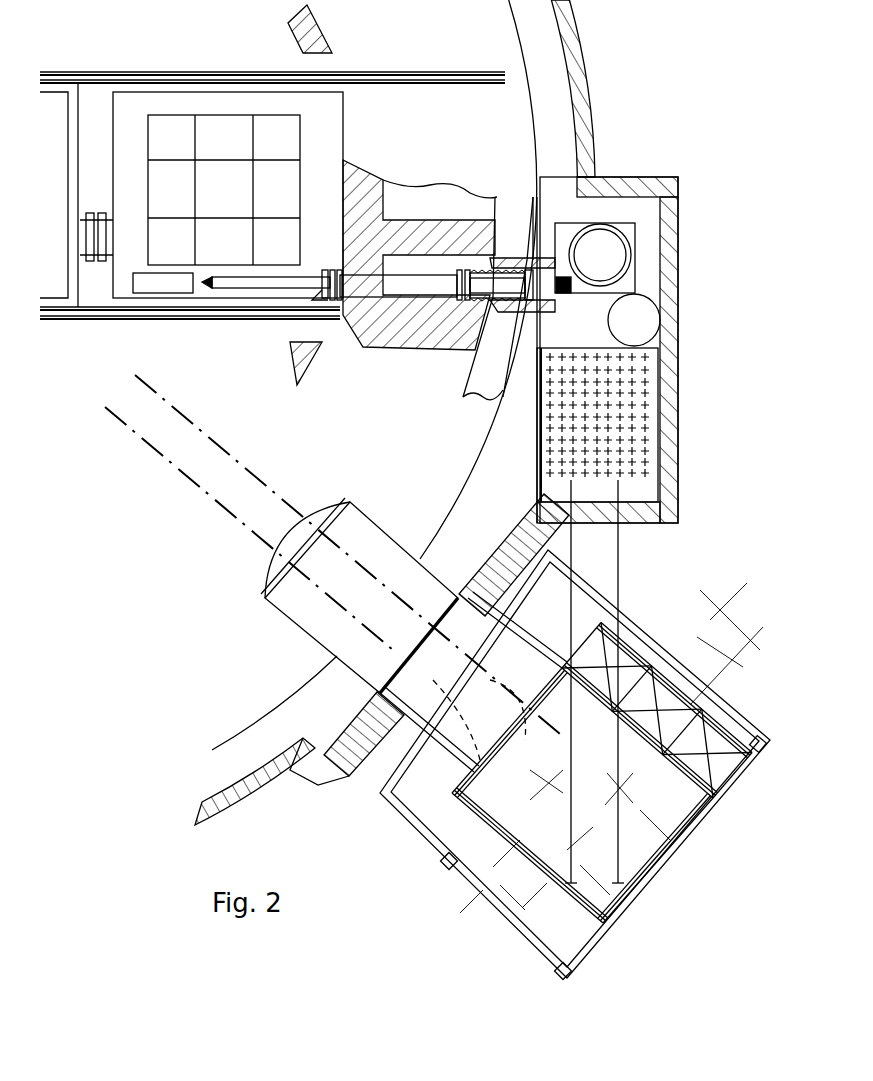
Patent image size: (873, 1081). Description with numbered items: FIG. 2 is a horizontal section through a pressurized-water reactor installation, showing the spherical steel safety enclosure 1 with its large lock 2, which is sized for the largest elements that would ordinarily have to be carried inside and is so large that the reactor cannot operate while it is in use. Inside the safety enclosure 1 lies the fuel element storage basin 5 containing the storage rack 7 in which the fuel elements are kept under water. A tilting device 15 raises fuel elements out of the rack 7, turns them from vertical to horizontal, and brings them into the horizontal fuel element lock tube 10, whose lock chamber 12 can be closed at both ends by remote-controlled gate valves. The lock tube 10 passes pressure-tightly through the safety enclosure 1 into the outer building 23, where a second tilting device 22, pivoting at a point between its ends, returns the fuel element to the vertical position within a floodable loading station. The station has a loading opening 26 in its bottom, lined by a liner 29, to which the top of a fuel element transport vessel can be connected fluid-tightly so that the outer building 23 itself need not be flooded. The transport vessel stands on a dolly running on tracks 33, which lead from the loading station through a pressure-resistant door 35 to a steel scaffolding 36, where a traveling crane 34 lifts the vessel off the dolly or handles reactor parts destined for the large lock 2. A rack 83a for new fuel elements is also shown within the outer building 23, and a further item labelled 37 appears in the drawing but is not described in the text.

The safety enclosure 1 is at (478, 458).
The large lock 2 is at (372, 530).
The fuel element storage basin 5 is at (326, 161).
The storage rack 7 is at (229, 204).
The fuel element lock tube 10 is at (465, 268).
The lock chamber 12 is at (424, 290).
The tilting device 15 is at (250, 290).
The second tilting device 22 is at (572, 288).
The outer building 23 is at (662, 390).
The loading opening 26 is at (630, 250).
The liner 29 is at (622, 268).
The tracks 33 is at (574, 555).
The traveling crane 34 is at (642, 668).
The pressure-resistant door 35 is at (620, 530).
The steel scaffolding 36 is at (690, 827).
The guide frame 37 is at (700, 635).
The storage rack for new fuel elements 83a is at (632, 450).